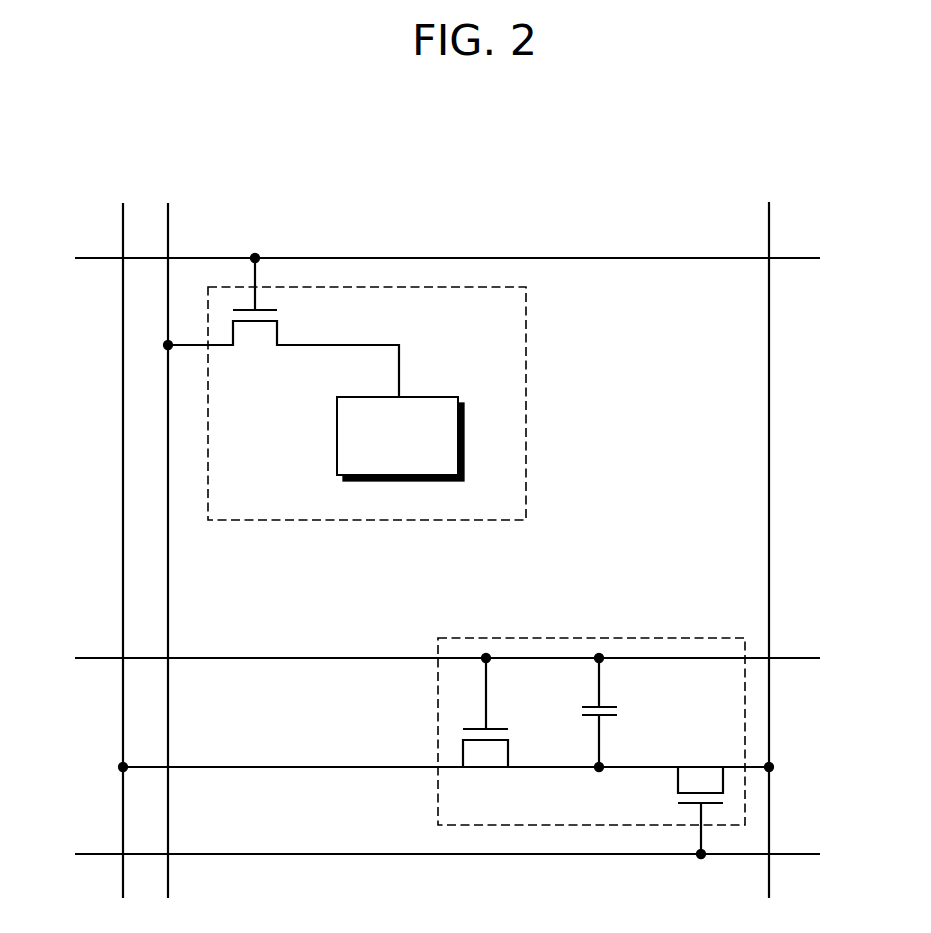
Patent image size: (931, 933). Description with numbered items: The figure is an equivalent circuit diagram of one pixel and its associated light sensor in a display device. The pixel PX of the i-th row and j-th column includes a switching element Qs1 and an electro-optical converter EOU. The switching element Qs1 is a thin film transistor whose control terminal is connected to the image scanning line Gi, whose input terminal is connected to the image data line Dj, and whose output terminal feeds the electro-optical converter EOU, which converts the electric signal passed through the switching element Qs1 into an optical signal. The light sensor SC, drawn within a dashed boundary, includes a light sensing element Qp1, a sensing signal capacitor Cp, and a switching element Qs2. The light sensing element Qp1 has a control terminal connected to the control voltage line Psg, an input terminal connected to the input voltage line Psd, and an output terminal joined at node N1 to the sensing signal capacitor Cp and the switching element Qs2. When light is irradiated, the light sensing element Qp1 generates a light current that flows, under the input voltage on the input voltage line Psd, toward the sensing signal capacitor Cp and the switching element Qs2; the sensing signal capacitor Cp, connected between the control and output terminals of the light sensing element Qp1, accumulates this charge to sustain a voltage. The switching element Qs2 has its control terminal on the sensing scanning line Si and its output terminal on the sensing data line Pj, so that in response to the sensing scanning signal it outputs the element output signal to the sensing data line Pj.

The input voltage line Psd is at (121, 568).
The image data line Dj is at (169, 531).
The sensing data line Pj is at (768, 567).
The image scanning line Gi is at (434, 255).
The control voltage line Psg is at (467, 657).
The sensing scanning line Si is at (458, 852).
The node N1 is at (446, 782).
The pixel PX is at (526, 458).
The switching element Qs1 is at (282, 327).
The electro-optical converter EOU is at (400, 439).
The light sensor SC is at (635, 638).
The light sensing element Qp1 is at (485, 729).
The sensing signal capacitor Cp is at (616, 712).
The switching element Qs2 is at (700, 793).